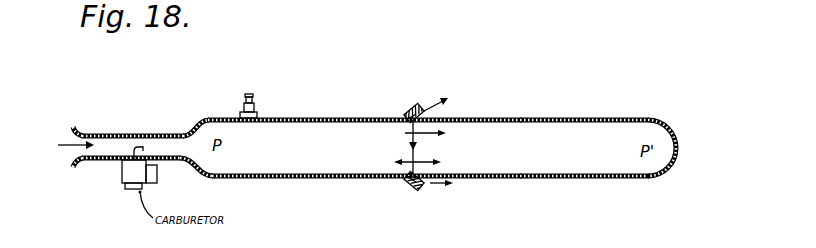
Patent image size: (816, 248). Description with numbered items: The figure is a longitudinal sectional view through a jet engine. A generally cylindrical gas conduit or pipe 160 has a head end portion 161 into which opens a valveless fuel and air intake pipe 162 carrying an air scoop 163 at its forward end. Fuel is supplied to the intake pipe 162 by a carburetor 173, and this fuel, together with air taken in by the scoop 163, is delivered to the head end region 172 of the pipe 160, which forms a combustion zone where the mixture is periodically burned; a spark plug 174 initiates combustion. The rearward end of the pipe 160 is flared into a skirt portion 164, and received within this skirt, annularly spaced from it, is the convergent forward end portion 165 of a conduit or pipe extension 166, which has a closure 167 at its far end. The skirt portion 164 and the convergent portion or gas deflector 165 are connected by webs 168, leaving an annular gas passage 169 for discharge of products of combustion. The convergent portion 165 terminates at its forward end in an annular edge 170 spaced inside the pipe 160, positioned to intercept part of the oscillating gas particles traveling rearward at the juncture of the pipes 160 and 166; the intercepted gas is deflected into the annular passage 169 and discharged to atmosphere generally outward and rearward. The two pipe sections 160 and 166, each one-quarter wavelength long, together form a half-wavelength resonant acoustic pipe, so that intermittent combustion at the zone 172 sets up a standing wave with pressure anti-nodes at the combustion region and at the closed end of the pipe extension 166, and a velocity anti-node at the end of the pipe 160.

The gas conduit or pipe 160 is at (314, 118).
The head end portion 161 is at (200, 123).
The fuel and air intake pipe 162 is at (118, 136).
The air scoop 163 is at (77, 126).
The skirt portion 164 is at (420, 106).
The convergent forward end portion 165 is at (432, 120).
The conduit or pipe extension 166 is at (537, 118).
The closure 167 is at (680, 133).
The webs 168 is at (410, 113).
The annular gas passage 169 is at (420, 189).
The annular edge 170 is at (412, 128).
The head end region 172 is at (200, 162).
The carburetor 173 is at (122, 177).
The spark plug 174 is at (255, 105).